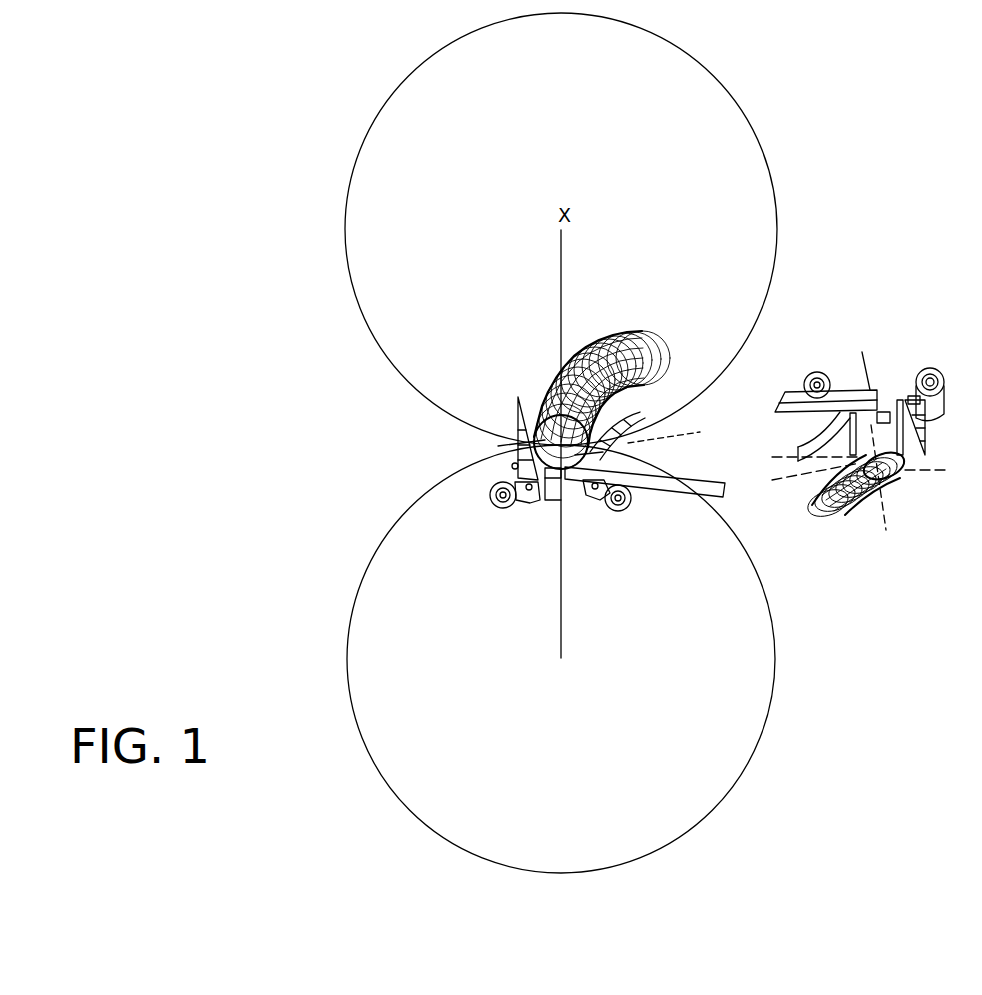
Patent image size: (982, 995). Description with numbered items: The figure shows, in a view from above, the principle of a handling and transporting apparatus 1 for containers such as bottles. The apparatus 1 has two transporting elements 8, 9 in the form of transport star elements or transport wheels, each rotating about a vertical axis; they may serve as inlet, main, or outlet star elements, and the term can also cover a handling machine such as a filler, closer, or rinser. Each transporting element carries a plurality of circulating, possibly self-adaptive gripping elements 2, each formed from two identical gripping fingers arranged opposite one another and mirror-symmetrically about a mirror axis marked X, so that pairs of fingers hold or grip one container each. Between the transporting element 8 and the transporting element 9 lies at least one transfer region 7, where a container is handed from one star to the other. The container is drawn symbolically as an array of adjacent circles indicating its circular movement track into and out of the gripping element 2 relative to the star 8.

The handling and transporting apparatus 1 is at (222, 192).
The gripping element 2 is at (509, 420).
The transfer region 7 is at (546, 507).
The transporting element 8 is at (561, 659).
The transporting element 9 is at (561, 229).